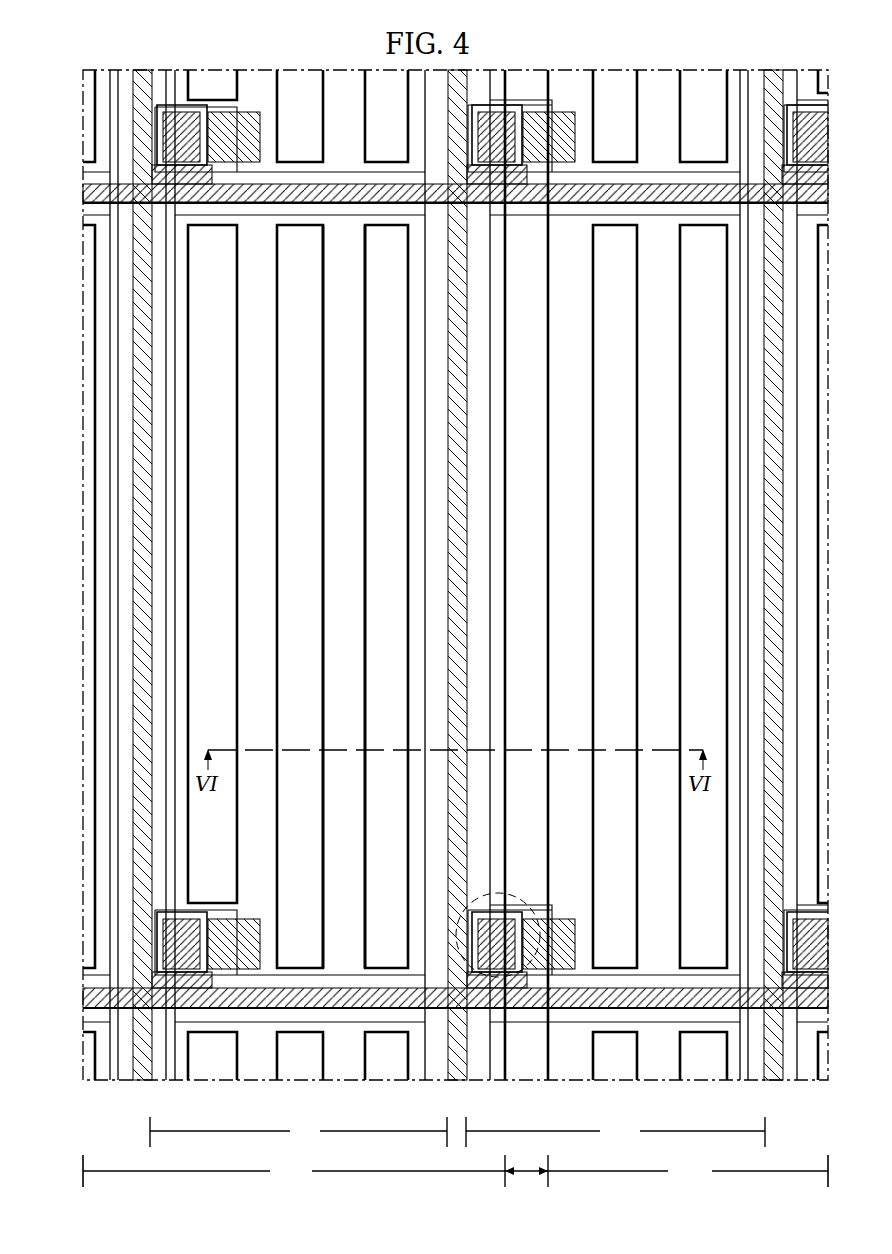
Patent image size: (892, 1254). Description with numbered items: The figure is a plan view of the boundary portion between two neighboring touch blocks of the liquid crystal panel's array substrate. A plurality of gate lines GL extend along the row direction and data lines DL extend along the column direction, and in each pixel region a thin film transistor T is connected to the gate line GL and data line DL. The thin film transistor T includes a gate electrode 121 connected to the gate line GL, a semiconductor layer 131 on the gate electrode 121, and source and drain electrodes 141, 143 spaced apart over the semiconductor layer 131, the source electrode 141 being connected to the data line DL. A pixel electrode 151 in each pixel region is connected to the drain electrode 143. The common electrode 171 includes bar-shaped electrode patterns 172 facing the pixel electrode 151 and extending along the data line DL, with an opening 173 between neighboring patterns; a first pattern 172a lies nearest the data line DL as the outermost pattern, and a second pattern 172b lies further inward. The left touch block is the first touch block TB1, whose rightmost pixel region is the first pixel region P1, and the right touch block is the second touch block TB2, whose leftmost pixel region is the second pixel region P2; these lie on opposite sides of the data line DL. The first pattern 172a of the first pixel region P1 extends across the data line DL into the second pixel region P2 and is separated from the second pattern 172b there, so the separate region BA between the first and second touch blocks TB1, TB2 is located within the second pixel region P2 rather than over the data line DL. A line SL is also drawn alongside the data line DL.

The gate electrode 121 is at (153, 895).
The semiconductor layer 131 is at (187, 965).
The source electrode 141 is at (134, 934).
The drain electrode 143 is at (224, 962).
The pixel electrode 151 is at (175, 350).
The common electrode 171 is at (182, 313).
The electrode pattern 172 is at (443, 304).
The first pattern 172a is at (505, 327).
The second pattern 172b is at (365, 327).
The opening 173 is at (384, 451).
The sensing line SL is at (117, 406).
The data line DL is at (136, 437).
The gate line GL is at (90, 993).
The thin film transistor T is at (488, 977).
The first pixel region P1 is at (298, 1132).
The second pixel region P2 is at (615, 1132).
The first touch block TB1 is at (294, 1171).
The second touch block TB2 is at (688, 1171).
The separate region BA is at (526, 1176).